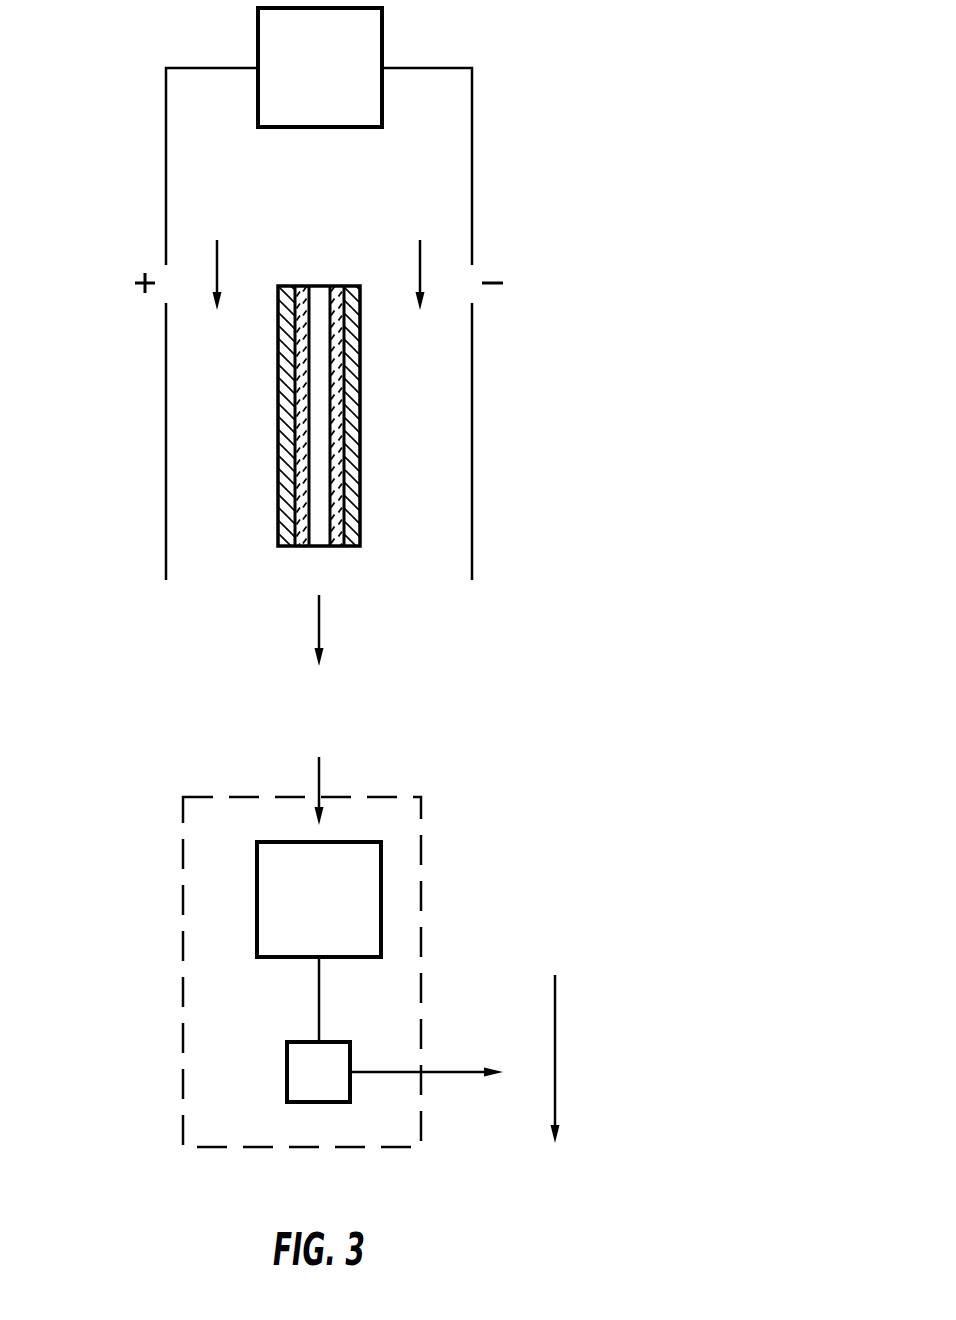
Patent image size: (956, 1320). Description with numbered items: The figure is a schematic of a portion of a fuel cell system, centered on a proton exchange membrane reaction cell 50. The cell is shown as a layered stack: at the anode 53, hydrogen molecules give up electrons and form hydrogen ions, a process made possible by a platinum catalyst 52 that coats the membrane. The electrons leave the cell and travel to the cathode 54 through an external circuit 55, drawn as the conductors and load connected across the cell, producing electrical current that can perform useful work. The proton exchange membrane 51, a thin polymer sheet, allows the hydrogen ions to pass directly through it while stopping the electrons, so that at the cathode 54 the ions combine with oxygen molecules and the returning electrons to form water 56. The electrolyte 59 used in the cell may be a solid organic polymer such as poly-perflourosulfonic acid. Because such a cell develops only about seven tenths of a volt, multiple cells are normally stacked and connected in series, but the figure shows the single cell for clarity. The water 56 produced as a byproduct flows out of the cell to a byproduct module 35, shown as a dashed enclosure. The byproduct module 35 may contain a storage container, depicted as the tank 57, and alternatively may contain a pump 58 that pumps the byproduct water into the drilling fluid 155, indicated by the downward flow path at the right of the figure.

The proton exchange membrane reaction cell 50 is at (632, 186).
The external circuit 55 is at (382, 32).
The electrolyte 59 is at (193, 446).
The proton exchange membrane 51 is at (320, 286).
The cathode 54 is at (290, 547).
The anode 53 is at (345, 547).
The platinum catalyst 52 is at (300, 547).
The water 56 is at (349, 710).
The byproduct module 35 is at (183, 965).
The tank 57 is at (383, 880).
The pump 58 is at (287, 1065).
The drilling fluid 155 is at (555, 1046).